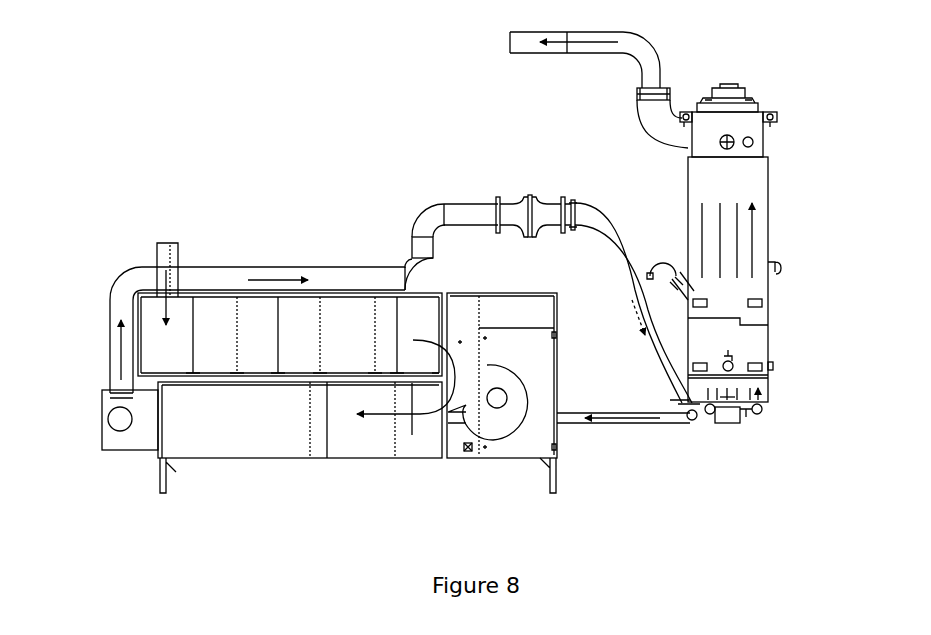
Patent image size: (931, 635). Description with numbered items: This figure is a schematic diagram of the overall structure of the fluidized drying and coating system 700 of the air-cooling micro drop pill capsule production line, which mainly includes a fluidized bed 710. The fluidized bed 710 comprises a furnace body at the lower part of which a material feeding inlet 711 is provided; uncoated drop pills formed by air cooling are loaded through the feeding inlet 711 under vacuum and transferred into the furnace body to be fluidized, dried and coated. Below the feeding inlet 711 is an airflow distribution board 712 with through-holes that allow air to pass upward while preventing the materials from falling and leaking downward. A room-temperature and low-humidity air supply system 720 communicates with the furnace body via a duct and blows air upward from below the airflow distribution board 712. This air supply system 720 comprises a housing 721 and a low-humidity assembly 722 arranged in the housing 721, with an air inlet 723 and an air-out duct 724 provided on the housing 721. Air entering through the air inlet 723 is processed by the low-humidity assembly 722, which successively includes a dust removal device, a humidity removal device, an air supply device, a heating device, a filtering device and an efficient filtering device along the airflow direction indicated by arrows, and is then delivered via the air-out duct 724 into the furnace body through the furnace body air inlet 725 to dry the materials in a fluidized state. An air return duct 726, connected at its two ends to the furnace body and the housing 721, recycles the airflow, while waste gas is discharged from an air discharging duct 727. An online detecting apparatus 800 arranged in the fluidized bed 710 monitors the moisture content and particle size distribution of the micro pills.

The fluidized drying and coating system 700 is at (272, 132).
The fluidized bed 710 is at (745, 188).
The material feeding inlet 711 is at (662, 257).
The airflow distribution board 712 is at (758, 378).
The room-temperature and low-humidity air supply system 720 is at (418, 455).
The housing 721 is at (313, 458).
The low-humidity assembly 722 is at (215, 327).
The air inlet 723 is at (165, 247).
The air-out duct 724 is at (320, 273).
The furnace body air inlet 725 is at (688, 392).
The air return duct 726 is at (607, 420).
The air discharging duct 727 is at (533, 47).
The online detecting apparatus 800 is at (770, 367).